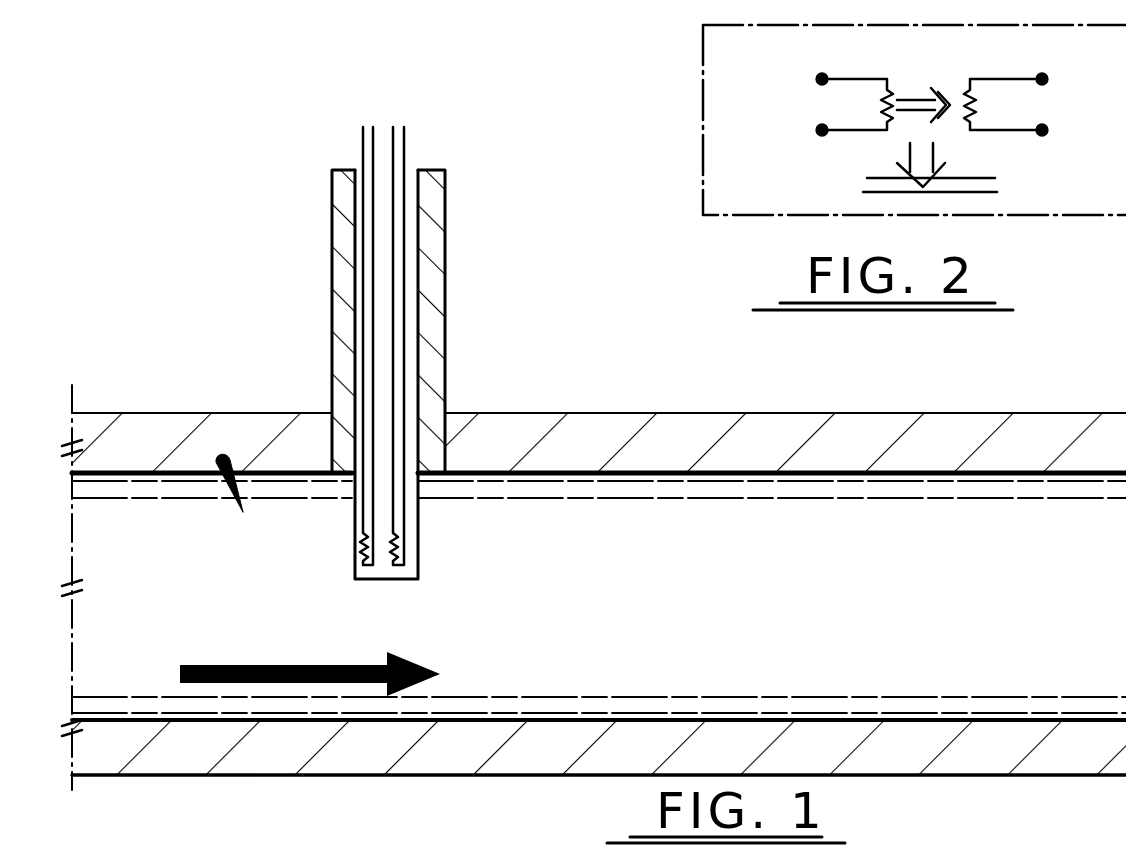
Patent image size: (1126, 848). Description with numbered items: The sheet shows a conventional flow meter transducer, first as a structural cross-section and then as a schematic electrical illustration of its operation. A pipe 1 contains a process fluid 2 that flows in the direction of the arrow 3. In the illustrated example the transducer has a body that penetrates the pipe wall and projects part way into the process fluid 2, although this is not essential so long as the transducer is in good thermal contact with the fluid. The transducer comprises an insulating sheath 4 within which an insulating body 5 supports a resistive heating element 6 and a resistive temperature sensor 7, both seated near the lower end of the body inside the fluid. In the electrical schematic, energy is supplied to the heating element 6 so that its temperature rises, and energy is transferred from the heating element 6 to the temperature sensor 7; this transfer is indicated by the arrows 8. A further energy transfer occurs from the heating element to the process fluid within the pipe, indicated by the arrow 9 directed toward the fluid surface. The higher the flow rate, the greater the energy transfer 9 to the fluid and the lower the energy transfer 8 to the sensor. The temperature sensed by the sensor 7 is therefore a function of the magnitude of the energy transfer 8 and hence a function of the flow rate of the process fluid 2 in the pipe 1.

In FIG. 1, the pipe 1 is at (150, 437).
In FIG. 2, the pipe 1 is at (875, 182).
In FIG. 1, the process fluid 2 is at (222, 458).
In FIG. 1, the arrow 3 is at (228, 666).
In FIG. 1, the insulating sheath 4 is at (340, 310).
In FIG. 1, the insulating body 5 is at (358, 378).
In FIG. 1, the resistive heating element 6 is at (362, 543).
In FIG. 2, the resistive heating element 6 is at (885, 102).
In FIG. 1, the resistive temperature sensor 7 is at (402, 540).
In FIG. 2, the resistive temperature sensor 7 is at (972, 97).
In FIG. 2, the arrows 8 is at (932, 100).
In FIG. 2, the arrow 9 is at (922, 152).